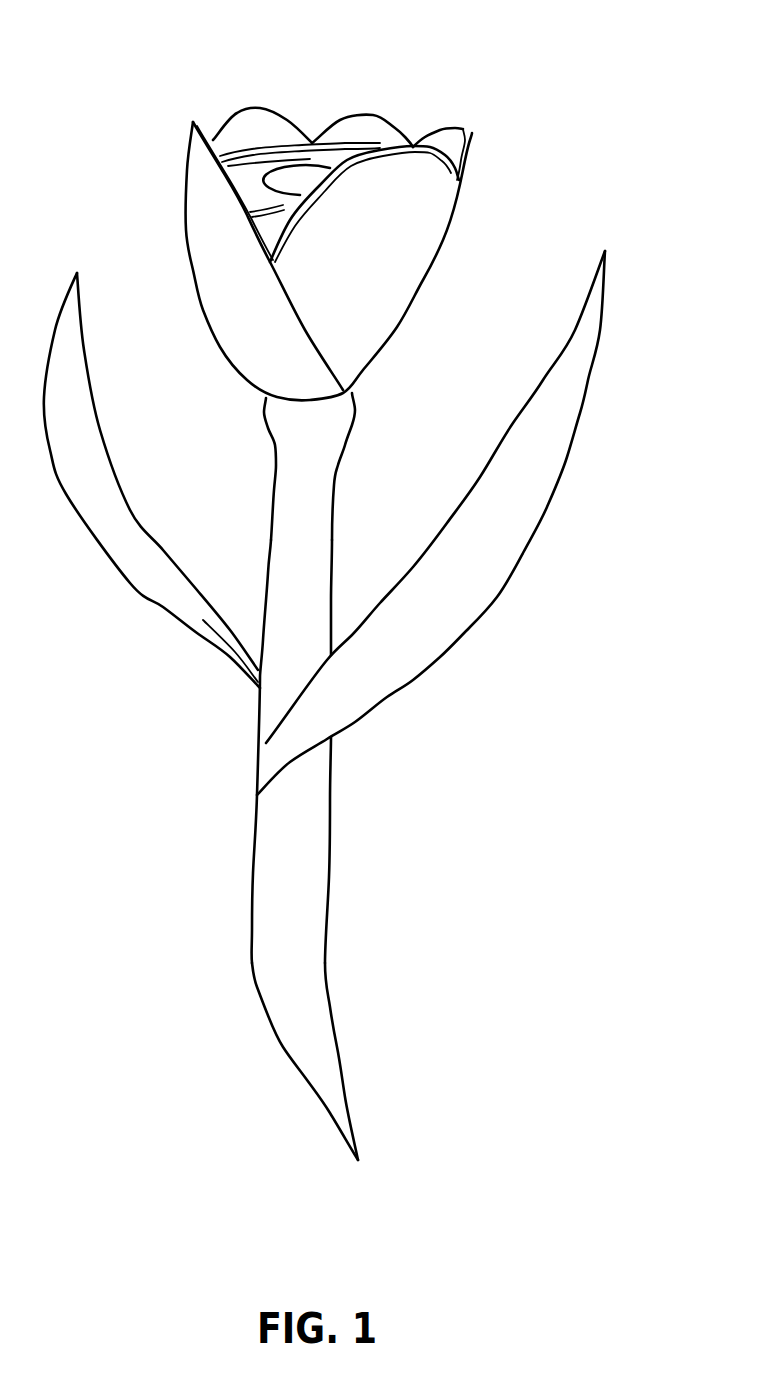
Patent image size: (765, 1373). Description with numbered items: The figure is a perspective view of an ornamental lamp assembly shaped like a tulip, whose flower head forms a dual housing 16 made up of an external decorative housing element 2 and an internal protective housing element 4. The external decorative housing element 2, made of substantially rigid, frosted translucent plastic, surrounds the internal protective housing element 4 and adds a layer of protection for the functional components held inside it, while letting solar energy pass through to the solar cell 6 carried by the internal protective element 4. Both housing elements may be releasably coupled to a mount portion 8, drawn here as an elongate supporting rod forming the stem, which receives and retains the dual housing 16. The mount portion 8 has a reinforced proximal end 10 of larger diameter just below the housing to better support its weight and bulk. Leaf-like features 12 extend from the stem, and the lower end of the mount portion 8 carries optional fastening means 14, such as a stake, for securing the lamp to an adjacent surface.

The dual housing 16 is at (200, 102).
The external decorative housing element 2 is at (437, 203).
The internal protective housing element 4 is at (242, 170).
The solar cell 6 is at (310, 173).
The reinforced proximal end 10 is at (336, 421).
The mount portion 8 is at (319, 810).
The leaf 12 is at (592, 332).
The fastening means 14 is at (325, 1073).